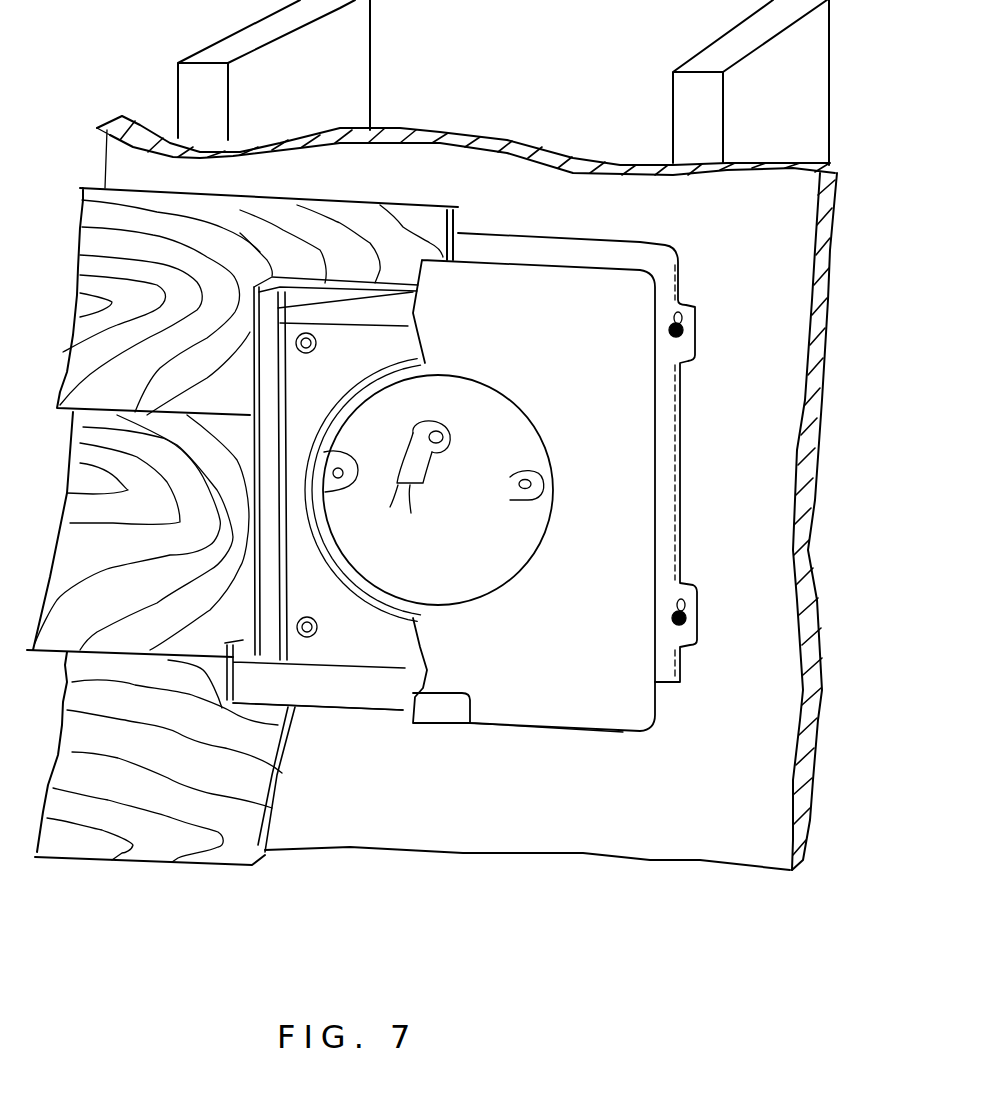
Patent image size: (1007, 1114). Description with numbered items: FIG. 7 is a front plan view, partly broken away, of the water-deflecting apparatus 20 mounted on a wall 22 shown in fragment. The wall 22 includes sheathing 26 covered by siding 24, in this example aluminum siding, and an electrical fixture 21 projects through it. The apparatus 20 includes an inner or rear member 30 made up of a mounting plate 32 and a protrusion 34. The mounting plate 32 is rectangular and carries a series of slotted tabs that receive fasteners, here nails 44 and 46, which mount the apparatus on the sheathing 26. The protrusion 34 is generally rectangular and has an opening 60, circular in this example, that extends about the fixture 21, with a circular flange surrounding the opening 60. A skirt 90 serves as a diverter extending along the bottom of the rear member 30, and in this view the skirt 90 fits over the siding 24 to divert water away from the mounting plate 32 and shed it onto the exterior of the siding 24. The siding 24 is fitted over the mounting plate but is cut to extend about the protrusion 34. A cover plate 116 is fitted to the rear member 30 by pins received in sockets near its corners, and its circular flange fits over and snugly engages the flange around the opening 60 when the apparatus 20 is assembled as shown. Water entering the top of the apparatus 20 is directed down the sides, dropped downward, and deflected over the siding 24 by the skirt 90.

The apparatus 20 is at (704, 249).
The electrical fixture 21 is at (453, 430).
The wall 22 is at (760, 140).
The siding 24 is at (283, 214).
The sheathing 26 is at (510, 177).
The rear member 30 is at (692, 429).
The mounting plate 32 is at (667, 533).
The protrusion 34 is at (340, 643).
The nail 44 is at (690, 330).
The nail 46 is at (690, 612).
The opening 60 is at (407, 617).
The skirt 90 is at (382, 695).
The cover plate 116 is at (563, 692).